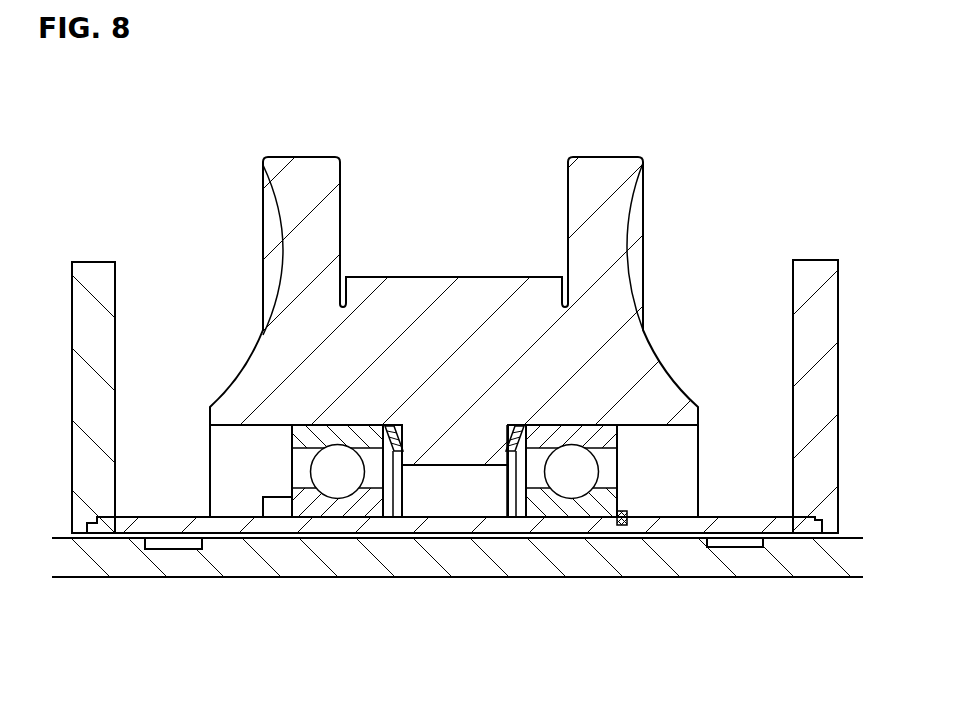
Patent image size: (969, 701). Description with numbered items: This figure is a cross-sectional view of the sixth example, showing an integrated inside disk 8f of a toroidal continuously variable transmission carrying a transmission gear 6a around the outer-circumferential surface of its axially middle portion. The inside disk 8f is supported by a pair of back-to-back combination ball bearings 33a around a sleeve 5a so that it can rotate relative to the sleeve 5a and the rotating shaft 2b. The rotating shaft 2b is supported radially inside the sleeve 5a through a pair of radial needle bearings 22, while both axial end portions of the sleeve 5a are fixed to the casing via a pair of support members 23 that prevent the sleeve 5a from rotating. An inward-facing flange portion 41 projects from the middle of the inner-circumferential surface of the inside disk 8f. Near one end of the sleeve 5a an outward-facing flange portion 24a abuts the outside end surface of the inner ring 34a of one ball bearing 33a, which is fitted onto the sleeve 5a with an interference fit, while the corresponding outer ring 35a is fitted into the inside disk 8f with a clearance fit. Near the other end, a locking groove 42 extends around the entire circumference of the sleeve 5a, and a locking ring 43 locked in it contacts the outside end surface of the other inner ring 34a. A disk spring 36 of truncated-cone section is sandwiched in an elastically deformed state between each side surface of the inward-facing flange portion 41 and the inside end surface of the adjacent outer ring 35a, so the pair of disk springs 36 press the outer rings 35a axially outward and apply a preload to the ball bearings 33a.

The inside disk 8f is at (498, 165).
The transmission gear 6a is at (458, 297).
The support members 23 is at (96, 273).
The outer ring 35a is at (280, 442).
The locking ring 43 is at (625, 513).
The radial needle bearings 22 is at (172, 549).
The outward-facing flange portion 24a is at (275, 508).
The inner ring 34a is at (320, 508).
The ball bearings 33a is at (343, 516).
The disk spring 36 is at (391, 505).
The inward-facing flange portion 41 is at (455, 455).
The locking groove 42 is at (618, 534).
The sleeve 5a is at (678, 530).
The rotating shaft 2b is at (815, 565).